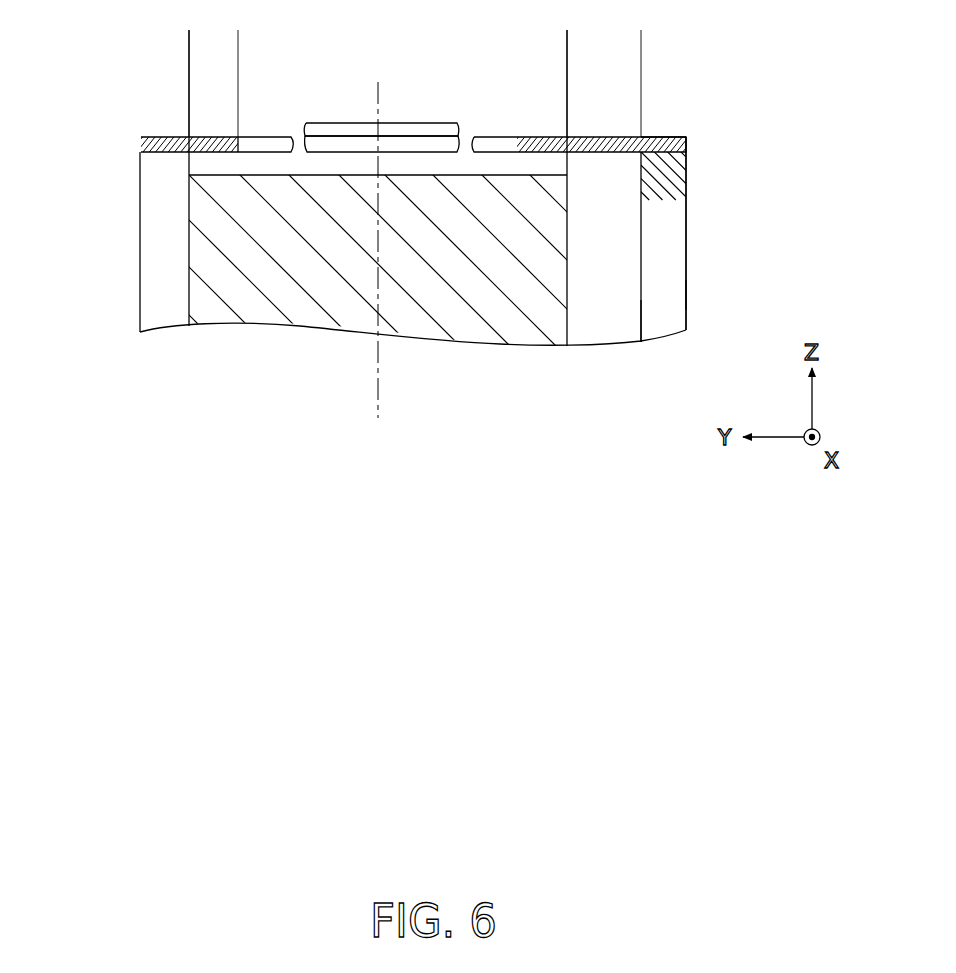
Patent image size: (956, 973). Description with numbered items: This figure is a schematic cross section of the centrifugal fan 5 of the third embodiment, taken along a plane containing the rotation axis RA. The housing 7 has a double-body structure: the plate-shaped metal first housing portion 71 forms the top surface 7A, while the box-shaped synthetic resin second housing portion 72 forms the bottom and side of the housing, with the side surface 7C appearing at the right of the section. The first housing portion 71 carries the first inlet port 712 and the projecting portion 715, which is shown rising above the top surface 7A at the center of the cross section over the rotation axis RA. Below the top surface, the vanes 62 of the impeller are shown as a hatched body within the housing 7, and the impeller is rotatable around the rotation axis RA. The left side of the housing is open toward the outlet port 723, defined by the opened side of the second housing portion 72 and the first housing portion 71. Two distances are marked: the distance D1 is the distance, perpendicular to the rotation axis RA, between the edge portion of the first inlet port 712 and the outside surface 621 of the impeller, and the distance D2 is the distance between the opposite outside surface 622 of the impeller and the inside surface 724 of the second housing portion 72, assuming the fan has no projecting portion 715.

The centrifugal fan 5 is at (716, 78).
The housing 7 is at (760, 116).
The top surface 7A is at (672, 137).
The side surface of package 7C is at (686, 296).
The first housing portion 71 is at (686, 136).
The second housing portion 72 is at (686, 187).
The first inlet port 712 is at (245, 142).
The projecting portion 715 is at (437, 122).
The vanes 62 is at (268, 312).
The outside surface 621 is at (189, 203).
The outside surface 622 is at (567, 248).
The outlet port 723 is at (140, 272).
The inside surface 724 is at (638, 308).
The distance D1 is at (235, 33).
The distance D2 is at (638, 35).
The rotation axis RA is at (378, 392).